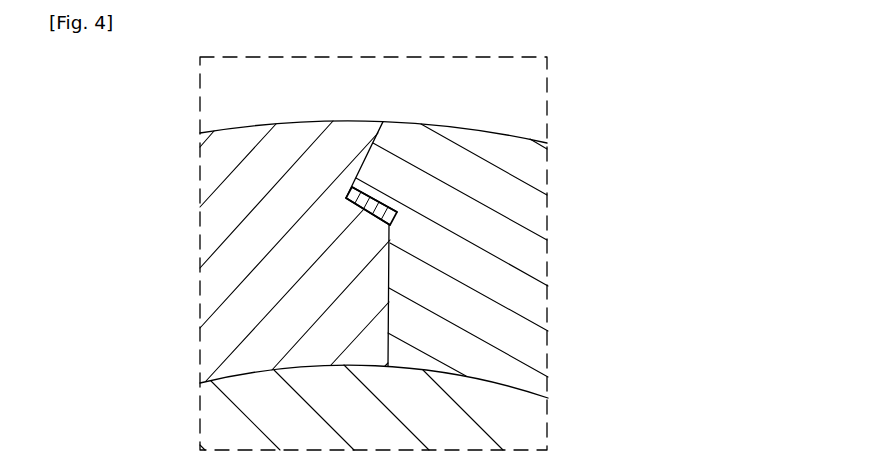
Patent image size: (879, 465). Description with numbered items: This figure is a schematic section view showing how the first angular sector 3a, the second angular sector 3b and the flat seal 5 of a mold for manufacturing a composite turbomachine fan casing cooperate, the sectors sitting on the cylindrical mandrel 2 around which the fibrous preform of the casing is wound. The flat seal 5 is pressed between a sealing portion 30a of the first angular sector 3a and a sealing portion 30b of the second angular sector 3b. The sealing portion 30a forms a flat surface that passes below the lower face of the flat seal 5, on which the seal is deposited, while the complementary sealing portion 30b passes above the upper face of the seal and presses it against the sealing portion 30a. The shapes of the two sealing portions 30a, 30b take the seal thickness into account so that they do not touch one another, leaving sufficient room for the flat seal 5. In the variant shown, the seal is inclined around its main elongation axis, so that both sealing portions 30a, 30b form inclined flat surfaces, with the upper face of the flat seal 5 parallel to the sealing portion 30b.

The mandrel 2 is at (528, 427).
The first angular sector 3a is at (232, 153).
The second angular sector 3b is at (517, 245).
The flat seal 5 is at (346, 199).
The sealing portion of the first angular sector 30a is at (368, 213).
The sealing portion of the second angular sector 30b is at (372, 193).